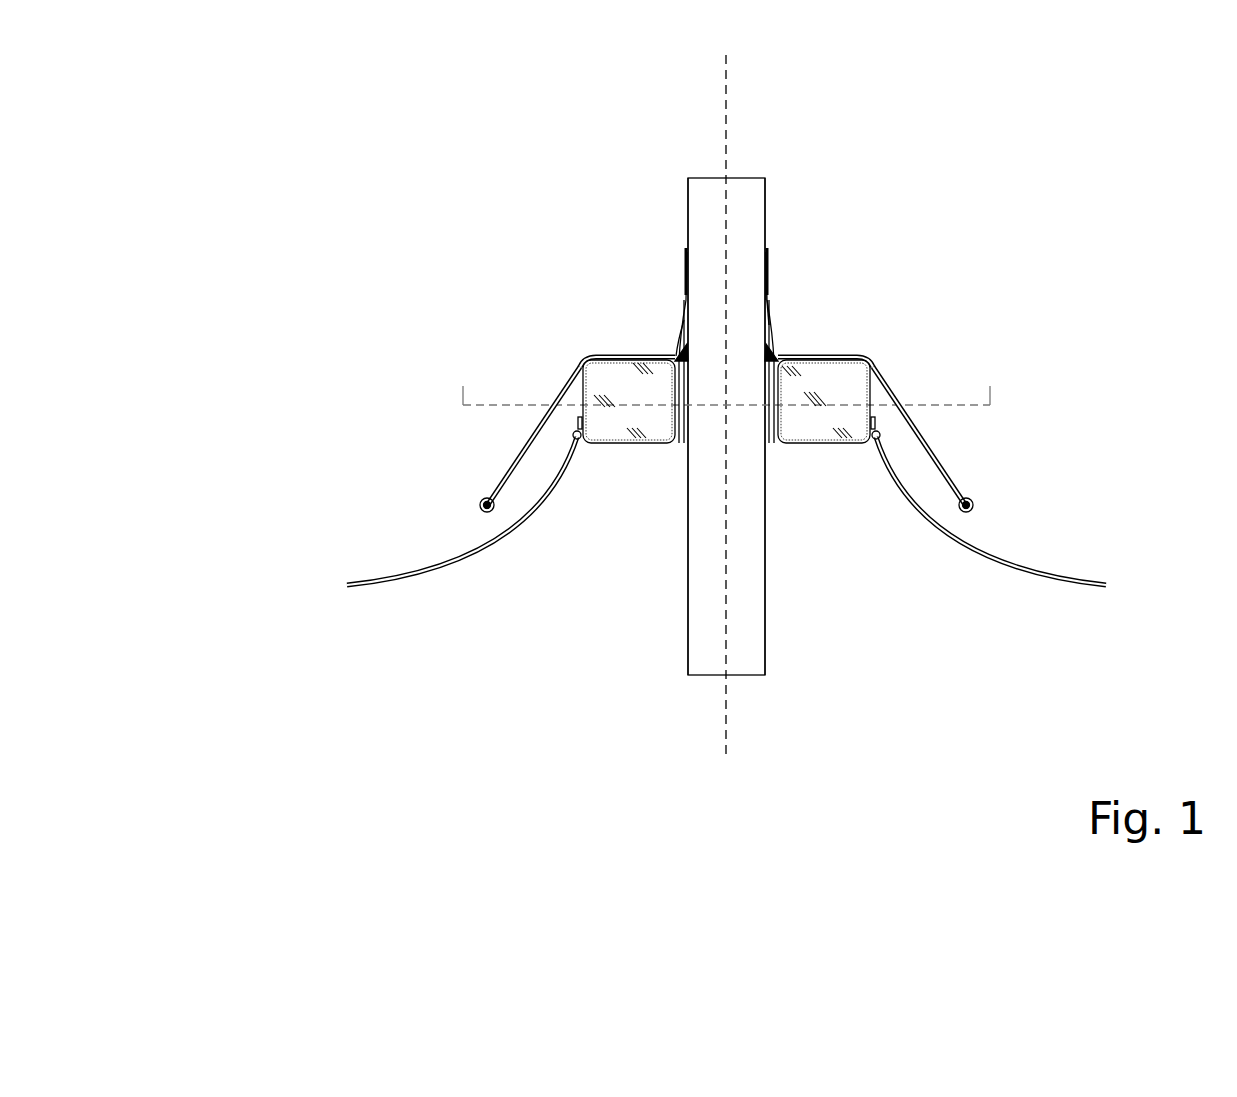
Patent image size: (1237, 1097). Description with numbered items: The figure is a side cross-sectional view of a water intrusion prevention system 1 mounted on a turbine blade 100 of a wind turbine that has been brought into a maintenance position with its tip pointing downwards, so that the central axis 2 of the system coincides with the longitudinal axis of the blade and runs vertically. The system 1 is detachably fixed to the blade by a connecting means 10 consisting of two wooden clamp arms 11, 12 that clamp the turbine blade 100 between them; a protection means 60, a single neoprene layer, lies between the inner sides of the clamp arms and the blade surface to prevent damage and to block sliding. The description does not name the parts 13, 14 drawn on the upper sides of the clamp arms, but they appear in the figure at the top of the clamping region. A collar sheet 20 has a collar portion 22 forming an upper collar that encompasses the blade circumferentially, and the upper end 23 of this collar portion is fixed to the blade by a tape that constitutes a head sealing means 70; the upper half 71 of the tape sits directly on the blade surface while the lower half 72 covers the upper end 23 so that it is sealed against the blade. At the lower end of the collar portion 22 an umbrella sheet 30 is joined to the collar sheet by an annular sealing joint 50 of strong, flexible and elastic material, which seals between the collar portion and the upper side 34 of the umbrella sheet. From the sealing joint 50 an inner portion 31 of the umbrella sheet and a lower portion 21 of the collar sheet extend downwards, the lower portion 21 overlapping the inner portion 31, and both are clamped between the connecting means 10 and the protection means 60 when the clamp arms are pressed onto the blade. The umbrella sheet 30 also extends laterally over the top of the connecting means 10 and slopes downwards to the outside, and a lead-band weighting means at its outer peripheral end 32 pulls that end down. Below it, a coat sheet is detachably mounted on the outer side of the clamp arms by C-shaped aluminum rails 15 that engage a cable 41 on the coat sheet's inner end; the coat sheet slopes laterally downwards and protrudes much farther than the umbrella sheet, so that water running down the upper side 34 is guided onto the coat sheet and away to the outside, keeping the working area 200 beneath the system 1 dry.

The water intrusion prevention system 1 is at (356, 326).
The central axis 2 is at (726, 740).
The connecting means 10 is at (696, 492).
The clamp arm 11 is at (618, 433).
The clamp arm 12 is at (827, 428).
The first cover plate 13 is at (870, 383).
The second cover plate 14 is at (853, 440).
The rail 15 is at (579, 422).
The collar sheet 20 is at (752, 272).
The lower portion 21 is at (793, 377).
The collar portion 22 is at (677, 313).
The upper end 23 is at (770, 282).
The umbrella sheet 30 is at (781, 407).
The inner portion 31 is at (673, 398).
The outer peripheral end 32 is at (982, 492).
The upper side 34 is at (900, 393).
The cable 41 is at (573, 435).
The sealing joint 50 is at (676, 356).
The protection means 60 is at (685, 387).
The head sealing means 70 is at (678, 250).
The upper half 71 is at (767, 250).
The lower half 72 is at (768, 323).
The turbine blade 100 is at (748, 643).
The working area 200 is at (457, 688).